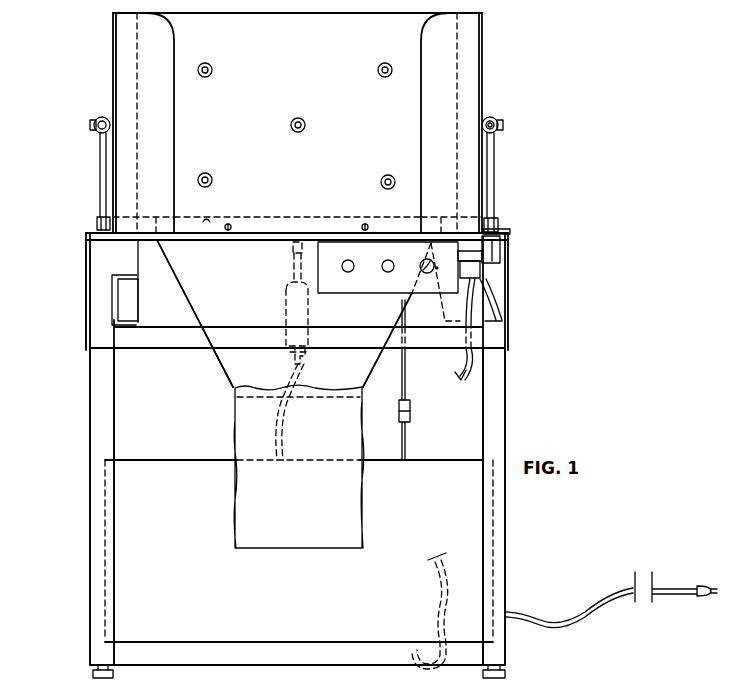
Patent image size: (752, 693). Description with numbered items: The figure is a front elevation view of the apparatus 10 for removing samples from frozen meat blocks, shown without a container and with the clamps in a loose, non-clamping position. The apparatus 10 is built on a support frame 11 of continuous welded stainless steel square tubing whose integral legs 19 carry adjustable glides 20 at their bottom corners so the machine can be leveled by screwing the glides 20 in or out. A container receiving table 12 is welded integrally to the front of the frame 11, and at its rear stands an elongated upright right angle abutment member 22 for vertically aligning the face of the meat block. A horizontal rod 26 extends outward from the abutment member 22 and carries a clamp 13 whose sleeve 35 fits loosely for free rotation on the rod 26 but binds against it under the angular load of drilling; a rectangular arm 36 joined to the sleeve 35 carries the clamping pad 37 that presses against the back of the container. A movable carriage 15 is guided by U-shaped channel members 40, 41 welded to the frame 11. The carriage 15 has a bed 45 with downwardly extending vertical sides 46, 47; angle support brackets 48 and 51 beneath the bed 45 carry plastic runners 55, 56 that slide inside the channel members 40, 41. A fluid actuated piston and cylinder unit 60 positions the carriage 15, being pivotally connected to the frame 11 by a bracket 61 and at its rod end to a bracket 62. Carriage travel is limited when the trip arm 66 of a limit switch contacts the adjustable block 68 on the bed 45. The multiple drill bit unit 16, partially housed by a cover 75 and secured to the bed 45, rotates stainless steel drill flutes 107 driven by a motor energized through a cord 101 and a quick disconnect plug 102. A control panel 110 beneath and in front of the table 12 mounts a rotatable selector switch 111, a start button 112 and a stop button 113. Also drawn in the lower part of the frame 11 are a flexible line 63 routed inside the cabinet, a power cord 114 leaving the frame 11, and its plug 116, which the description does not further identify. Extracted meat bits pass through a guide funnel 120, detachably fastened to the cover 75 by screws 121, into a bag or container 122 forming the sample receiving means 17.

The apparatus 10 is at (572, 104).
The frame 11 is at (514, 390).
The container receiving table 12 is at (284, 230).
The clamp 13 is at (521, 165).
The carriage 15 is at (126, 256).
The multiple drill bit unit 16 is at (266, 91).
The sample receiving means 17 is at (226, 386).
The legs 19 is at (90, 424).
The adjustable glides 20 is at (93, 672).
The upright right angle abutment member 22 is at (478, 63).
The horizontal rod 26 is at (499, 122).
The sleeve 35 is at (497, 117).
The rectangular arm 36 is at (494, 180).
The clamping pad 37 is at (497, 220).
The channel member 40 is at (480, 307).
The channel member 41 is at (112, 285).
The bed 45 is at (205, 221).
The vertical side 46 is at (487, 255).
The vertical side 47 is at (87, 276).
The angle support bracket 48 is at (445, 306).
The angle bracket 51 is at (150, 296).
The plastic runner 55 is at (492, 283).
The plastic runner 56 is at (118, 302).
The piston and cylinder unit 60 is at (284, 305).
The bracket 61 is at (305, 360).
The bracket 62 is at (291, 244).
The power cable 63 is at (460, 592).
The trip arm 66 is at (500, 248).
The adjustment block 68 is at (512, 233).
The cover 75 is at (397, 31).
The cord 101 is at (406, 432).
The quick disconnect plug 102 is at (410, 410).
The drill flutes 107 is at (212, 70).
The control panel 110 is at (337, 245).
The rotatable selector switch 111 is at (346, 274).
The start button 112 is at (388, 274).
The stop button 113 is at (424, 262).
The power cord 114 is at (592, 606).
The plug 116 is at (707, 600).
The guide funnel 120 is at (220, 357).
The screws 121 is at (236, 222).
The bag or container 122 is at (235, 482).